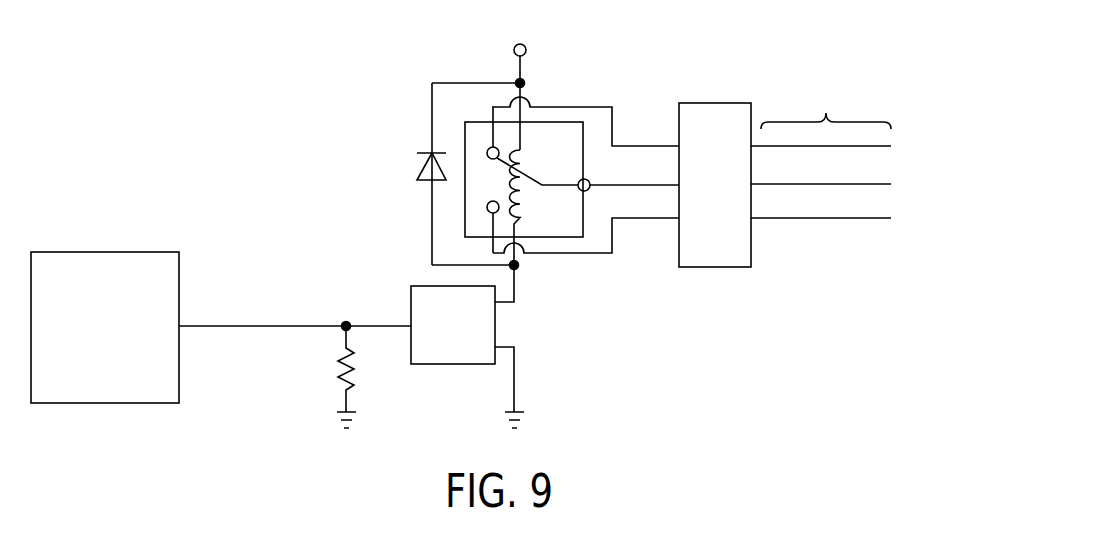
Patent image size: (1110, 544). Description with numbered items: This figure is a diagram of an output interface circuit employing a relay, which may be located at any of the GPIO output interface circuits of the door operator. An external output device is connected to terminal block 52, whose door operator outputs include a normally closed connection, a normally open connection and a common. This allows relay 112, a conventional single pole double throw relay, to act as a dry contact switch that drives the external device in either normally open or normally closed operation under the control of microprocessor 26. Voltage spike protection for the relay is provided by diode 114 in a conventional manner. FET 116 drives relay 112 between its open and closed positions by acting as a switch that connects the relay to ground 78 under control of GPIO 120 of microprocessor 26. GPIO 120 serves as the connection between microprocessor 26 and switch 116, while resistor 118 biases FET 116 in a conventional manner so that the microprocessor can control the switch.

The microprocessor 26 is at (100, 405).
The GPIO 120 is at (198, 325).
The resistor 118 is at (340, 378).
The ground 78 is at (347, 400).
The FET 116 is at (436, 366).
The diode 114 is at (415, 180).
The relay 112 is at (565, 120).
The terminal block 52 is at (716, 268).